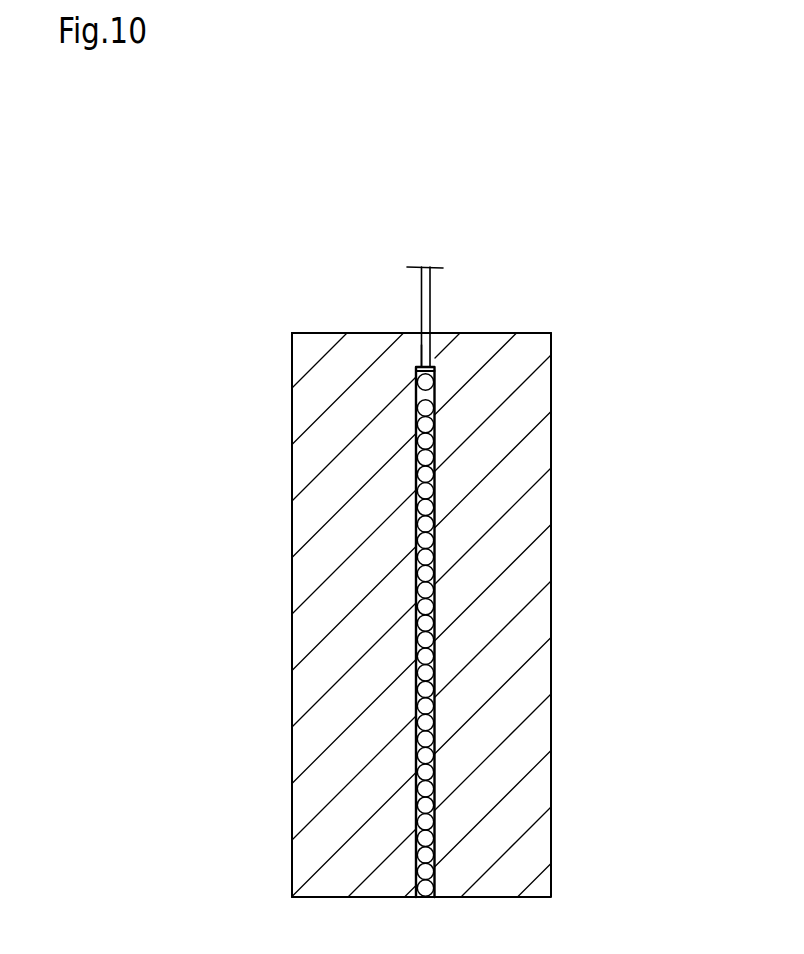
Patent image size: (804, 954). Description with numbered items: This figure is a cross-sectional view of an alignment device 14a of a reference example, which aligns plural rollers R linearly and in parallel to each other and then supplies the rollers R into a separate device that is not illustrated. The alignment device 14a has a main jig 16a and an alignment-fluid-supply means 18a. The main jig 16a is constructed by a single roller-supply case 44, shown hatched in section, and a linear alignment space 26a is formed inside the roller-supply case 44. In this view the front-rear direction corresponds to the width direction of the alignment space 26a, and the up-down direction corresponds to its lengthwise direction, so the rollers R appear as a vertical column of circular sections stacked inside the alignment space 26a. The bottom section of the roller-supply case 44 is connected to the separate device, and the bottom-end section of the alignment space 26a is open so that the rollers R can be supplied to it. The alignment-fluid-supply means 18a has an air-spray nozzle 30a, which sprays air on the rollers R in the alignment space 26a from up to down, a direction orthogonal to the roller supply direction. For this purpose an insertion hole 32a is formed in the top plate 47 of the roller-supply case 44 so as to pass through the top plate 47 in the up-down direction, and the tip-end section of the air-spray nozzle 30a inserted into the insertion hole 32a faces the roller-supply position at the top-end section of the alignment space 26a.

The alignment device 14a is at (566, 330).
The main jig 16a is at (290, 462).
The alignment-fluid-supply means 18a is at (430, 286).
The alignment space 26a is at (430, 398).
The air-spray nozzle 30a is at (428, 312).
The insertion hole 32a is at (420, 362).
The roller-supply case 44 is at (320, 645).
The top plate 47 is at (340, 353).
The rollers R is at (425, 625).